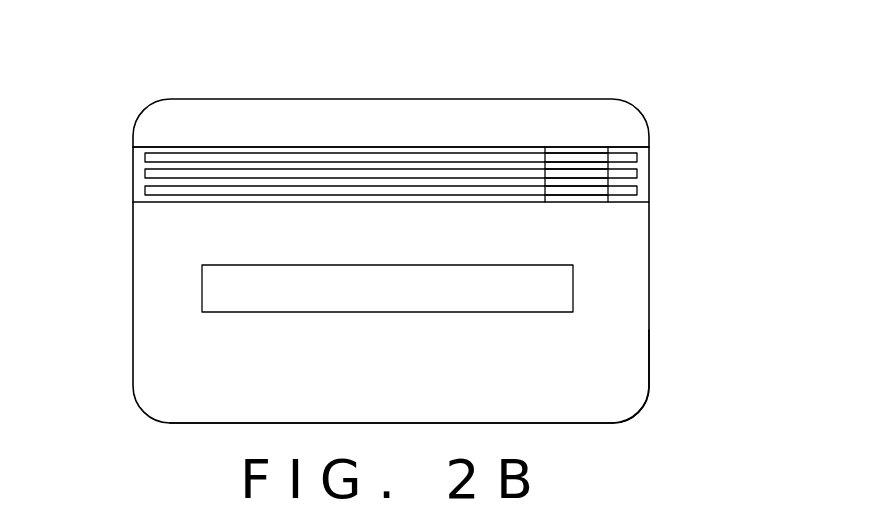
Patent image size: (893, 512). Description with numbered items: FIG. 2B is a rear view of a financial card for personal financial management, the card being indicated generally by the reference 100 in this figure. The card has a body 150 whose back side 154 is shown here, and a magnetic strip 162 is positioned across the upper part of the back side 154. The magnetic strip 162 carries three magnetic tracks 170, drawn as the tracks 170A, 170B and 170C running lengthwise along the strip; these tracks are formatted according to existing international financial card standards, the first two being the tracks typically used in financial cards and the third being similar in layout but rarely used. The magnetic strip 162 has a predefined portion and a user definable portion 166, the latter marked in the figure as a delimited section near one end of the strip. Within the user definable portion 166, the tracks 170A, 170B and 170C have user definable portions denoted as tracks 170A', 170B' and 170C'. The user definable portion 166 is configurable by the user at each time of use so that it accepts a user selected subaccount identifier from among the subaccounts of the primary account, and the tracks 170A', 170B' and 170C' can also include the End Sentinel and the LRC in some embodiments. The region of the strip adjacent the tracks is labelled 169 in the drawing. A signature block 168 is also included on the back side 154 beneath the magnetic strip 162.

The transaction card 100 is at (400, 73).
The body 150 is at (173, 203).
The back side 154 is at (620, 354).
The magnetic strip 162 is at (283, 160).
The user definable portion 166 is at (578, 134).
The signature block 168 is at (213, 297).
The stripe band boundary / spacing region 169 is at (455, 148).
The magnetic tracks 170 is at (453, 124).
The track 170A is at (450, 149).
The track 170B is at (453, 177).
The track 170C is at (452, 202).
The user definable track portion 170A' is at (648, 111).
The user definable track portion 170B' is at (646, 214).
The user definable track portion 170C' is at (639, 242).